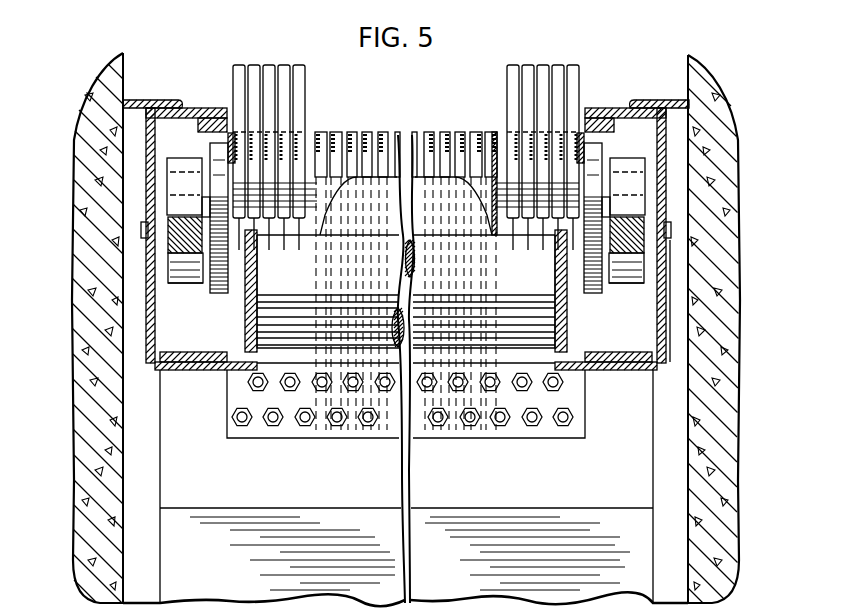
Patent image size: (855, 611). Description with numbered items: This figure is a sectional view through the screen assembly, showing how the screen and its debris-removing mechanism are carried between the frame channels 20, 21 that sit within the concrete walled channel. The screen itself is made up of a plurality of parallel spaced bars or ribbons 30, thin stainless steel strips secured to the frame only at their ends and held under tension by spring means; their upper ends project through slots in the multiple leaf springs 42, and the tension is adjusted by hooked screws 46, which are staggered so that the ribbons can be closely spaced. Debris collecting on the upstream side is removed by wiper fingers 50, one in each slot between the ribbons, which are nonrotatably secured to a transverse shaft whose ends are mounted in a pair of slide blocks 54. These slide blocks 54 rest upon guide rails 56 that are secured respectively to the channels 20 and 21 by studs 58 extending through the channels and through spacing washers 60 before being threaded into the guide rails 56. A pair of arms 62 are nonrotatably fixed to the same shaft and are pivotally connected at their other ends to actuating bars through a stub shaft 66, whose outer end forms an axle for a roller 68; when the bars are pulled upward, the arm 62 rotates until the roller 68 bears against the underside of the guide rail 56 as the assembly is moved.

The channel 20 is at (627, 288).
The channel 21 is at (147, 301).
The bars or ribbons 30 is at (473, 131).
The leaf springs 42 is at (374, 131).
The hooked screws 46 is at (322, 424).
The wiper fingers 50 is at (300, 64).
The slide blocks 54 is at (187, 168).
The guide rails 56 is at (157, 256).
The studs 58 is at (140, 230).
The spacing washers 60 is at (150, 213).
The arms 62 is at (222, 290).
The stub shaft 66 is at (167, 266).
The roller 68 is at (177, 288).